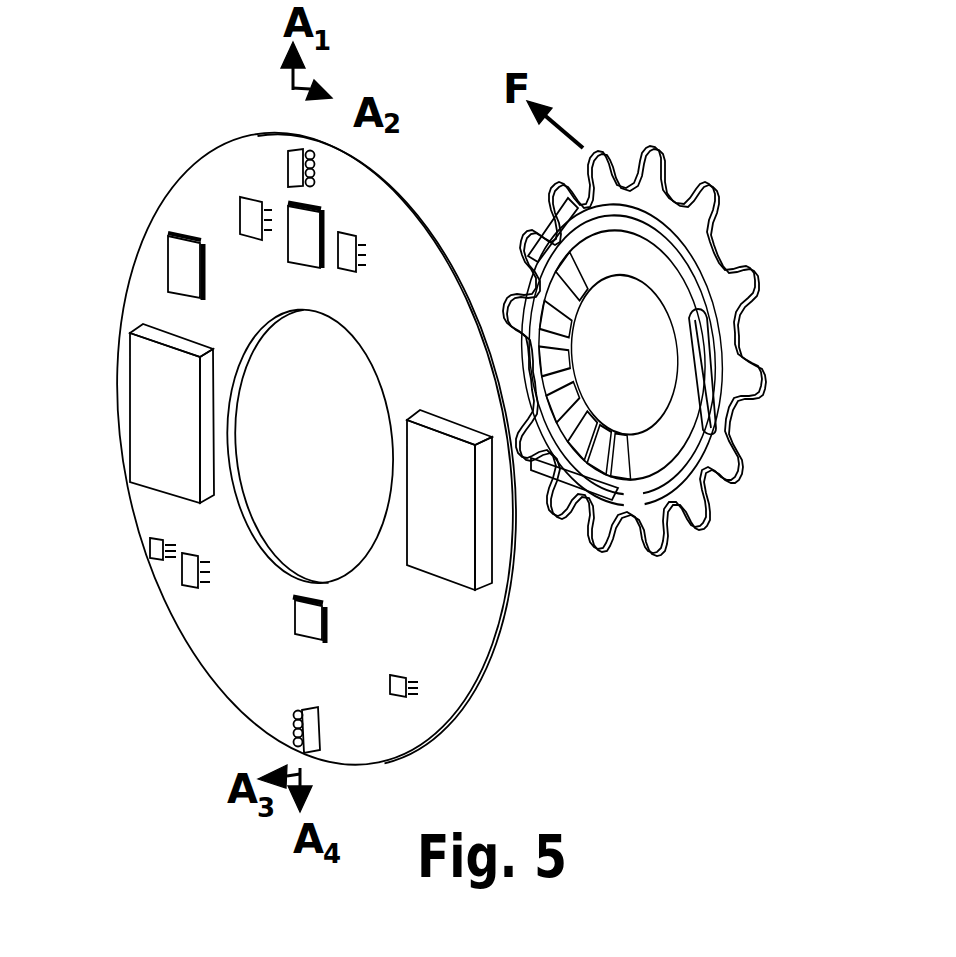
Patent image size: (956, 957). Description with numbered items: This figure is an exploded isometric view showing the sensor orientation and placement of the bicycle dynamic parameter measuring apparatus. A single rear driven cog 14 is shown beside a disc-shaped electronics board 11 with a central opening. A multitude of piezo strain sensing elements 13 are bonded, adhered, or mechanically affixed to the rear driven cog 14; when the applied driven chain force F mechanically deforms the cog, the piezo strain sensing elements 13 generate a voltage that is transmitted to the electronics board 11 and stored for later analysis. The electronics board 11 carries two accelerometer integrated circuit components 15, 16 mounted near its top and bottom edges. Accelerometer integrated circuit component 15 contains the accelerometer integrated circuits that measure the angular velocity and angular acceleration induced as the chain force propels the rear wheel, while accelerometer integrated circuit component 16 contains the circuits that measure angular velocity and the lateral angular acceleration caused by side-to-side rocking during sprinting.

The electronics board 11 is at (223, 607).
The piezo strain sensing elements 13 is at (640, 220).
The rear driven cog 14 is at (710, 277).
The accelerometer integrated circuit component 15 is at (287, 153).
The accelerometer integrated circuit component 16 is at (290, 727).